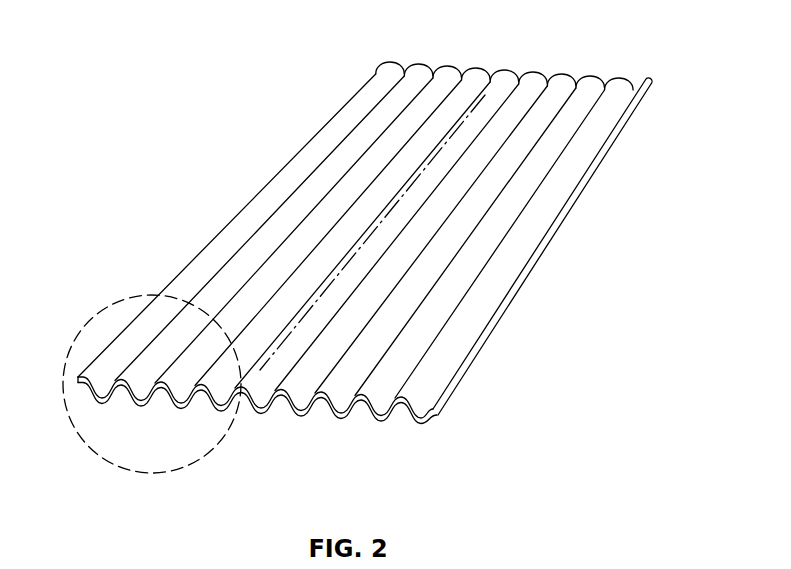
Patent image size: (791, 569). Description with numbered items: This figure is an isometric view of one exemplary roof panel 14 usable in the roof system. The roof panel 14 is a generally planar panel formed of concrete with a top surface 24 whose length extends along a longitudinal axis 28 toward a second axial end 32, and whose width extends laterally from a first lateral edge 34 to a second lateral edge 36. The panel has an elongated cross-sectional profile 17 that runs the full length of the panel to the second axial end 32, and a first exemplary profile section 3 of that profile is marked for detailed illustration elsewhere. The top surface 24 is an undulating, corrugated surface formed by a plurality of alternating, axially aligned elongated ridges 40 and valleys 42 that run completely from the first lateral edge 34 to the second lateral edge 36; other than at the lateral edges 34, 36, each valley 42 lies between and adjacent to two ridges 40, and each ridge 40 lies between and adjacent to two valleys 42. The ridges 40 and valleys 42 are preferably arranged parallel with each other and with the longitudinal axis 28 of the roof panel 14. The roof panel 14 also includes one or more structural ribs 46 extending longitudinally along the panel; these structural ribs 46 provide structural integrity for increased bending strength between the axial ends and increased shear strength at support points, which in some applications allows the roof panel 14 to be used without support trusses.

The roof panel 14 is at (350, 249).
The elongated cross-sectional profile 17 is at (81, 404).
The top surface 24 is at (430, 332).
The longitudinal axis 28 is at (476, 90).
The second axial end 32 is at (505, 70).
The first lateral edge 34 is at (275, 178).
The second lateral edge 36 is at (543, 252).
The ridges 40 is at (619, 79).
The valleys 42 is at (604, 91).
The structural ribs 46 is at (117, 392).
The first exemplary profile section 3 is at (150, 473).